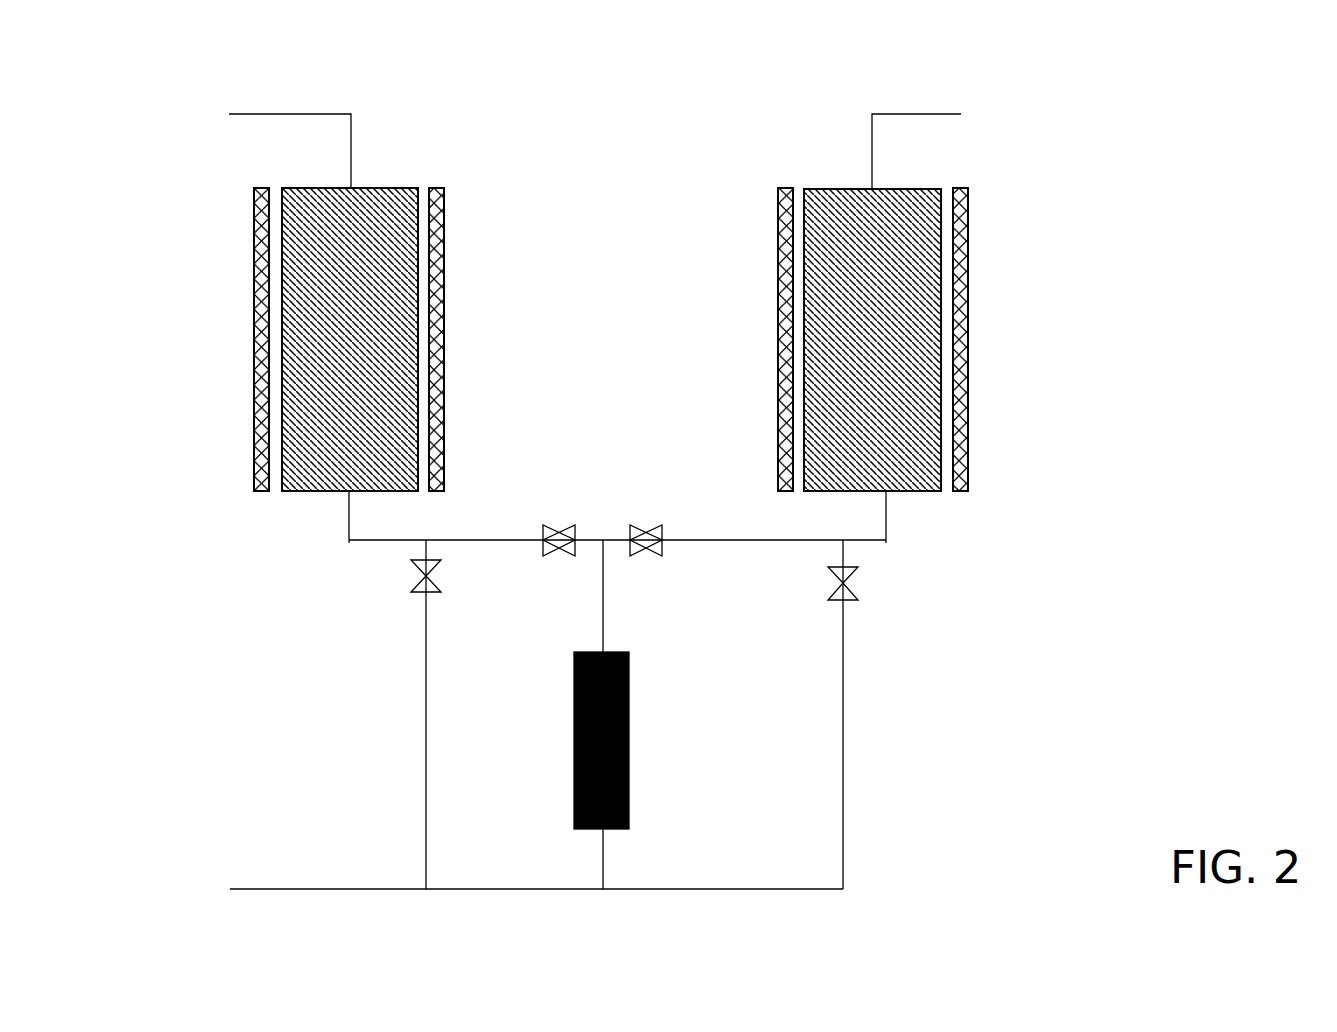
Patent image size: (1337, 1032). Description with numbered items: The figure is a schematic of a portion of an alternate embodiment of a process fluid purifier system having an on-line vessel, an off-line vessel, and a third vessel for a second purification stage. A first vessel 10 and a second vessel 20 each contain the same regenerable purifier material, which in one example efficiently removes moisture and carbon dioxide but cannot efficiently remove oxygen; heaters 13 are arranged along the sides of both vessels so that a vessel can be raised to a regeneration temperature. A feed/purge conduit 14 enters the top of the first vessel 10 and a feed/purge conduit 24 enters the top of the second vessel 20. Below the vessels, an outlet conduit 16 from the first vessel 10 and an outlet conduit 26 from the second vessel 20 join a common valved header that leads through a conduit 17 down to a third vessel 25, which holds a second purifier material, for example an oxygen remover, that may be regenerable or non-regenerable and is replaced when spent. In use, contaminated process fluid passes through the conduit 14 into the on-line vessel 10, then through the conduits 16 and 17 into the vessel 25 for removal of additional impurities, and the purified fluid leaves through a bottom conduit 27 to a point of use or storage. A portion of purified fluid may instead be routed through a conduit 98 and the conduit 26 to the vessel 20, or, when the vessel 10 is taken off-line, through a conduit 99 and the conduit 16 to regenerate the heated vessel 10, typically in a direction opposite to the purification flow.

The first vessel 10 is at (377, 188).
The second vessel 20 is at (858, 188).
The heaters 13 is at (778, 291).
The feed/purge conduit 14 is at (288, 113).
The feed/purge conduit 24 is at (908, 112).
The outlet conduit 16 is at (350, 515).
The outlet conduit 26 is at (890, 517).
The conduit 17 is at (598, 618).
The third vessel 25 is at (568, 742).
The conduit 99 is at (415, 712).
The conduit 98 is at (854, 720).
The conduit 27 is at (318, 888).